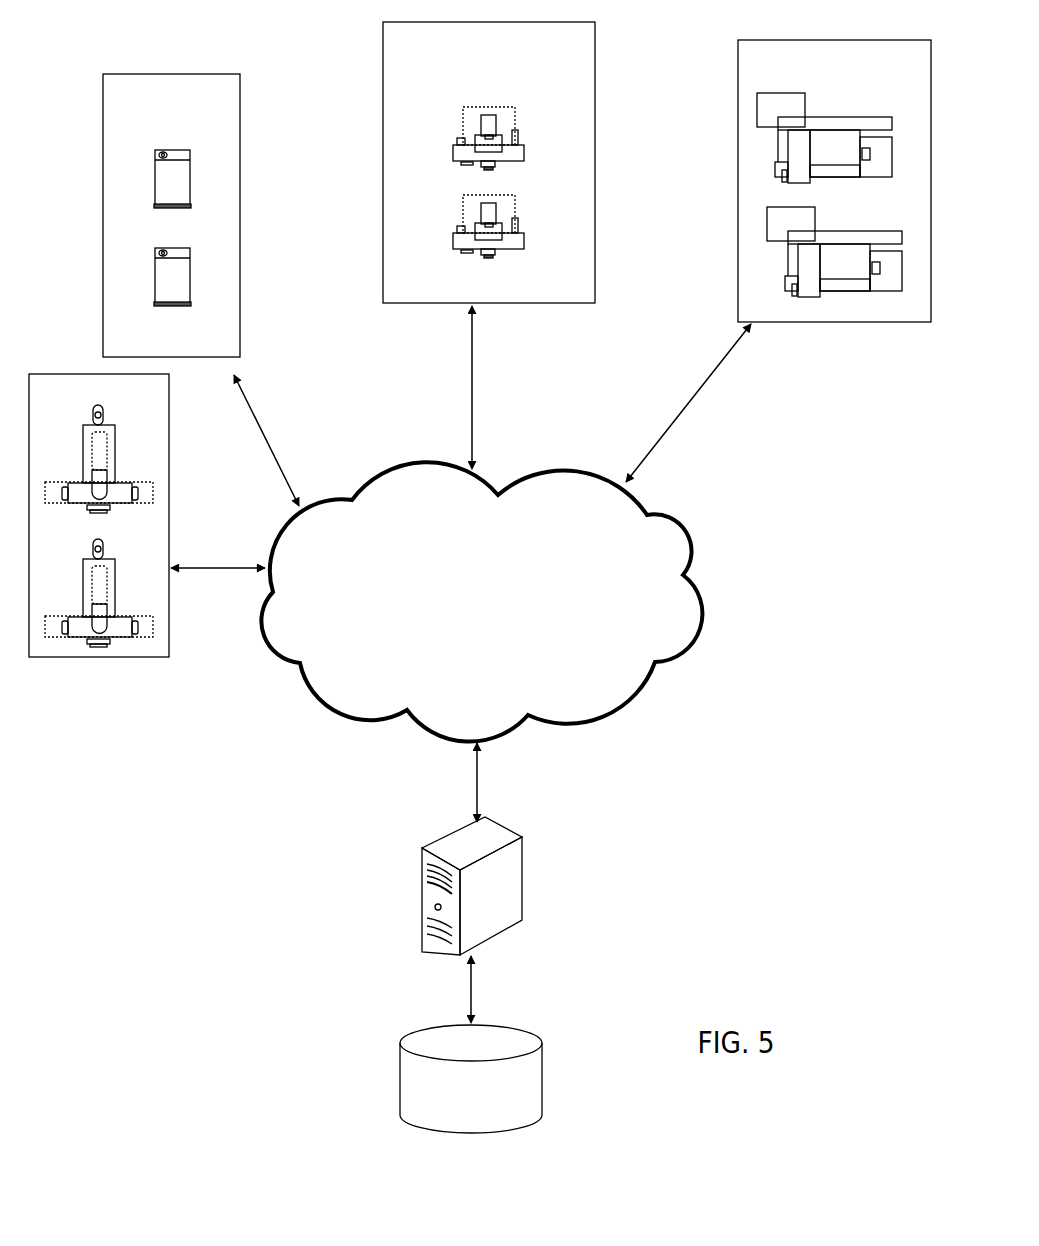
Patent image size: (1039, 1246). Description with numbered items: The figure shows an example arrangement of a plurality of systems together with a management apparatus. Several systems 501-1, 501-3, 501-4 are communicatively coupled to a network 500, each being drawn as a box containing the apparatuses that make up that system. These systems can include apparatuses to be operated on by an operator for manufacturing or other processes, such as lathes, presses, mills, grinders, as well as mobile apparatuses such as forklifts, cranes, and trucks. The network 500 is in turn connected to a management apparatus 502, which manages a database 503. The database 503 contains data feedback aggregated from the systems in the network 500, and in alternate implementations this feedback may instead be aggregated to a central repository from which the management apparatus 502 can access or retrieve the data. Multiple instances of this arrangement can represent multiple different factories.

The network 500 is at (481, 601).
The system 501-1 is at (349, 189).
The system 501-3 is at (834, 181).
The system 501-4 is at (99, 515).
The management apparatus 502 is at (472, 886).
The database 503 is at (471, 1079).